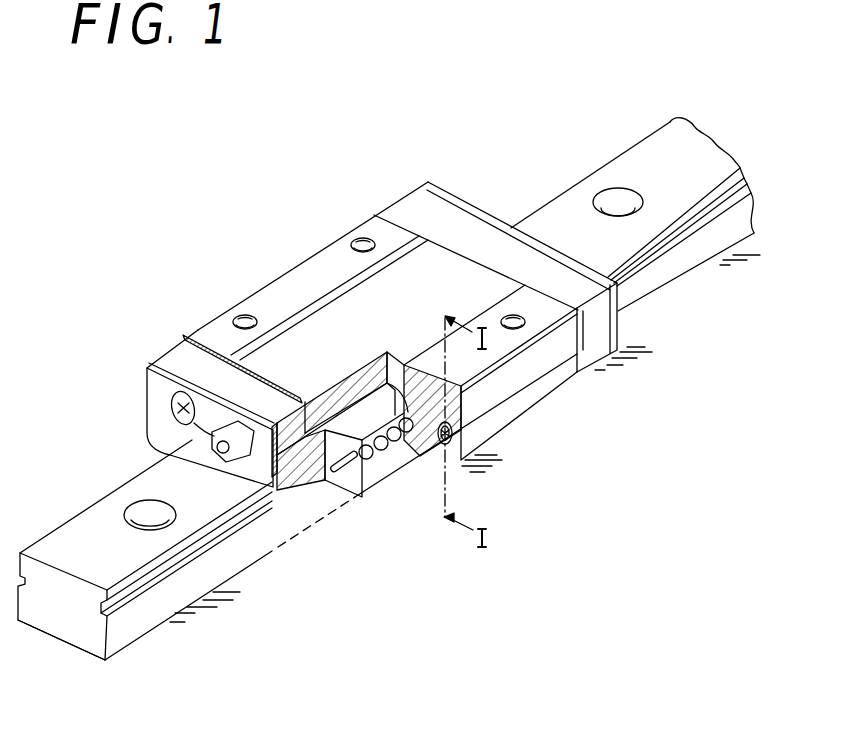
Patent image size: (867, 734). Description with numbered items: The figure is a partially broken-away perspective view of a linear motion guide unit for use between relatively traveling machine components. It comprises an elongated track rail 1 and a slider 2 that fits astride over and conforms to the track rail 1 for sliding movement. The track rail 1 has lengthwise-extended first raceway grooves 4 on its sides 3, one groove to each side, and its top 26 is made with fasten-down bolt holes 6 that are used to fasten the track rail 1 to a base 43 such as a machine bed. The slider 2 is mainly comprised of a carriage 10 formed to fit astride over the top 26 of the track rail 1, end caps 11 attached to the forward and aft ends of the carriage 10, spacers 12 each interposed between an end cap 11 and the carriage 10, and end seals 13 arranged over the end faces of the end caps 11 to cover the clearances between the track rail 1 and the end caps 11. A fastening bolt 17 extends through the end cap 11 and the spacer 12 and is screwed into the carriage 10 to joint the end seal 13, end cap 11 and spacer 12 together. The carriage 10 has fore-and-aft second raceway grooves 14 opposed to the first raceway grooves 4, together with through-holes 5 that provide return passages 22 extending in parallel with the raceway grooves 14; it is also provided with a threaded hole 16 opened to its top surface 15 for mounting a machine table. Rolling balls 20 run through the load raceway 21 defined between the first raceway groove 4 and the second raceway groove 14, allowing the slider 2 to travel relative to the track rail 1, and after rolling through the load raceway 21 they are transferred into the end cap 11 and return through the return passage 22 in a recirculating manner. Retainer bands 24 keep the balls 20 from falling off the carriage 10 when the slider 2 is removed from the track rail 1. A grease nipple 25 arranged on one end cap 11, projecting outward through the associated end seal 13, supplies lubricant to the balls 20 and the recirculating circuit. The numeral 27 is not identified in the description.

The track rail 1 is at (389, 397).
The slider 2 is at (353, 332).
The sides of the track rail 3 is at (187, 590).
The raceway groove 4 is at (253, 533).
The through-hole 5 is at (538, 334).
The bolt hole 6 is at (460, 410).
The carriage 10 is at (409, 340).
The end cap 11 is at (353, 303).
The spacer 12 is at (230, 353).
The end seal 13 is at (147, 362).
The raceway groove 14 is at (403, 441).
The top surface 15 is at (337, 257).
The threaded hole 16 is at (243, 317).
The fastening bolt 17 is at (173, 407).
The balls 20 is at (366, 460).
The load raceway 21 is at (385, 452).
The return passage 22 is at (455, 446).
The retainer band 24 is at (337, 467).
The grease nipple 25 is at (180, 428).
The top of the track rail 26 is at (100, 557).
The bolt hole of track rail 27 is at (160, 520).
The base 43 is at (163, 640).